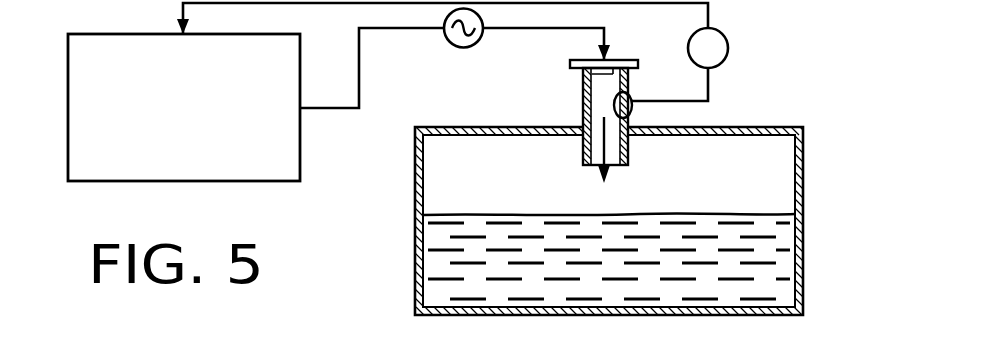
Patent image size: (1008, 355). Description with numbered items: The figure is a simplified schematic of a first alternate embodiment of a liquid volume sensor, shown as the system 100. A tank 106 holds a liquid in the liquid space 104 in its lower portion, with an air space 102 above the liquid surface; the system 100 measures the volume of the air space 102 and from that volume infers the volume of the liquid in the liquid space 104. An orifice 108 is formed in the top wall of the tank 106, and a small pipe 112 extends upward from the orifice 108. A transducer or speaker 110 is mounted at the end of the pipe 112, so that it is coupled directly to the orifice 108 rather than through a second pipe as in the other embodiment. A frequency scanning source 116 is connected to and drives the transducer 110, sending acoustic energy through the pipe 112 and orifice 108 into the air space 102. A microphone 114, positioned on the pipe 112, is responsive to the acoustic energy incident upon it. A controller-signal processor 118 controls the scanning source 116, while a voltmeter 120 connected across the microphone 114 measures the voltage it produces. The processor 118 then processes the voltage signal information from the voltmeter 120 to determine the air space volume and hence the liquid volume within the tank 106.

The system 100 is at (817, 168).
The air space 102 is at (732, 185).
The liquid space 104 is at (527, 277).
The tank 106 is at (415, 196).
The orifice 108 is at (594, 140).
The transducer or speaker 110 is at (586, 59).
The small pipe 112 is at (583, 98).
The microphone 114 is at (630, 95).
The frequency scanning source 116 is at (462, 48).
The controller-signal processor 118 is at (240, 181).
The voltmeter 120 is at (728, 48).